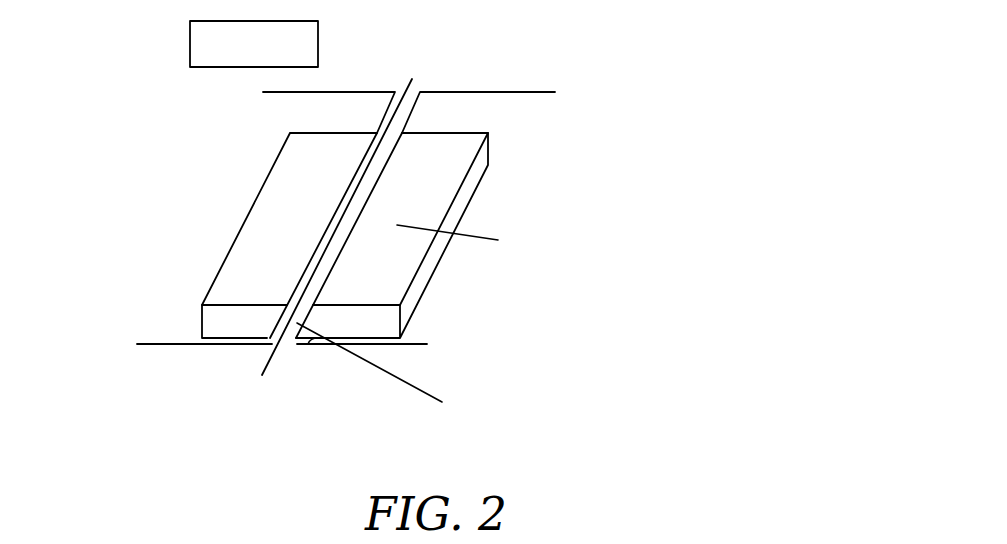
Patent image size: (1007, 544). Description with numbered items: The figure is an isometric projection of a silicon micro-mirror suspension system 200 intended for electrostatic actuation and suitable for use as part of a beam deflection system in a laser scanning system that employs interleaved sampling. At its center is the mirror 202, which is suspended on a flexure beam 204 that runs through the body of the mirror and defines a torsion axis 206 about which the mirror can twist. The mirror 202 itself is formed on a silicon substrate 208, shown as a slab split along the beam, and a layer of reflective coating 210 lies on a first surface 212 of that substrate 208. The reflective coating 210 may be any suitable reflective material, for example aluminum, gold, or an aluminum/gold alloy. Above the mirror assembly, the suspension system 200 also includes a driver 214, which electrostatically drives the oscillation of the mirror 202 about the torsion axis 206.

The silicon micro-mirror suspension system 200 is at (574, 105).
The mirror 202 is at (277, 233).
The flexure beam 204 is at (408, 120).
The torsion axis 206 is at (274, 357).
The silicon substrate 208 is at (434, 235).
The layer of reflective coating 210 is at (433, 187).
The first surface 212 is at (388, 273).
The driver 214 is at (318, 43).